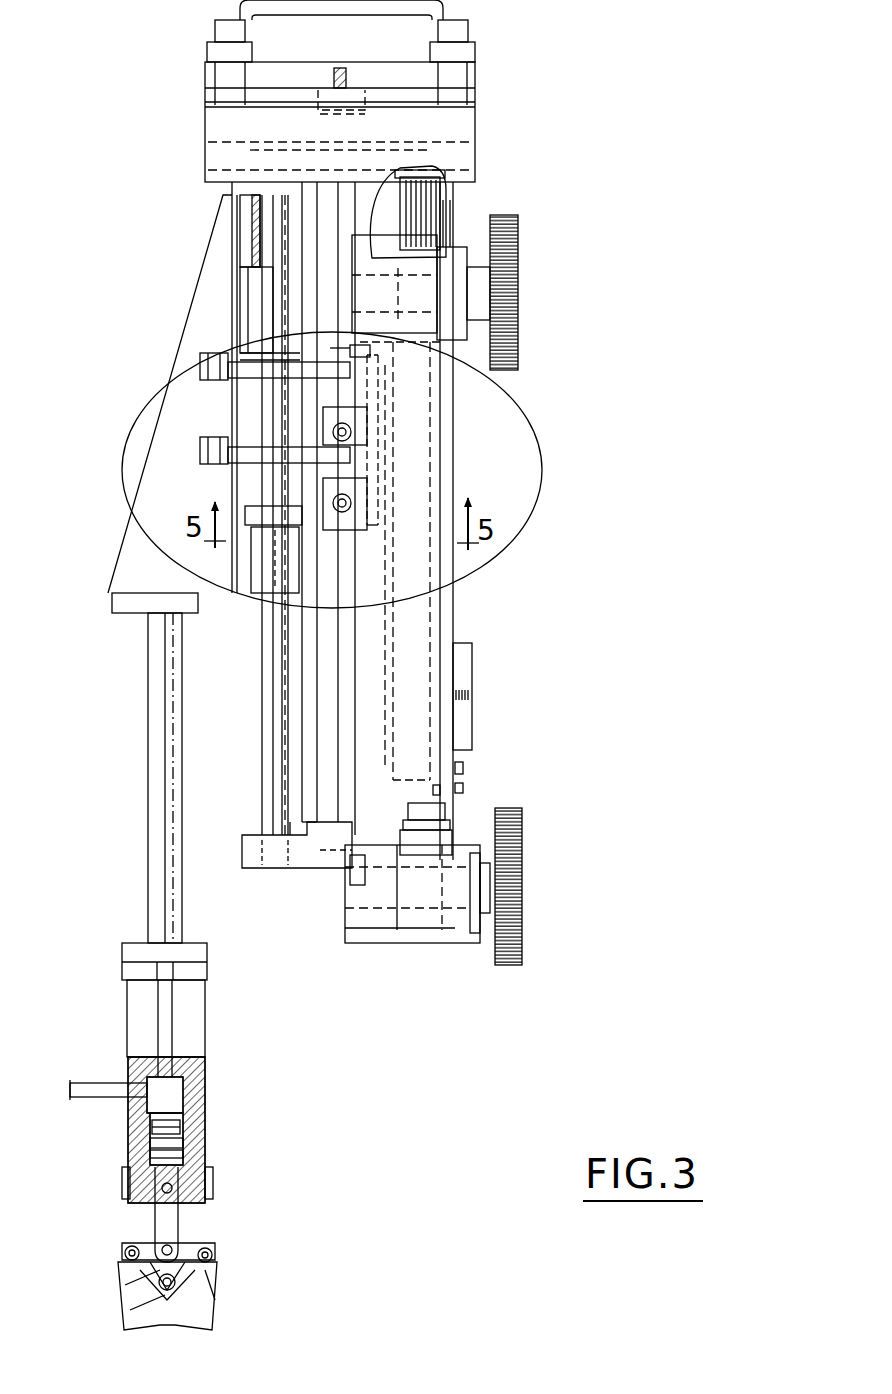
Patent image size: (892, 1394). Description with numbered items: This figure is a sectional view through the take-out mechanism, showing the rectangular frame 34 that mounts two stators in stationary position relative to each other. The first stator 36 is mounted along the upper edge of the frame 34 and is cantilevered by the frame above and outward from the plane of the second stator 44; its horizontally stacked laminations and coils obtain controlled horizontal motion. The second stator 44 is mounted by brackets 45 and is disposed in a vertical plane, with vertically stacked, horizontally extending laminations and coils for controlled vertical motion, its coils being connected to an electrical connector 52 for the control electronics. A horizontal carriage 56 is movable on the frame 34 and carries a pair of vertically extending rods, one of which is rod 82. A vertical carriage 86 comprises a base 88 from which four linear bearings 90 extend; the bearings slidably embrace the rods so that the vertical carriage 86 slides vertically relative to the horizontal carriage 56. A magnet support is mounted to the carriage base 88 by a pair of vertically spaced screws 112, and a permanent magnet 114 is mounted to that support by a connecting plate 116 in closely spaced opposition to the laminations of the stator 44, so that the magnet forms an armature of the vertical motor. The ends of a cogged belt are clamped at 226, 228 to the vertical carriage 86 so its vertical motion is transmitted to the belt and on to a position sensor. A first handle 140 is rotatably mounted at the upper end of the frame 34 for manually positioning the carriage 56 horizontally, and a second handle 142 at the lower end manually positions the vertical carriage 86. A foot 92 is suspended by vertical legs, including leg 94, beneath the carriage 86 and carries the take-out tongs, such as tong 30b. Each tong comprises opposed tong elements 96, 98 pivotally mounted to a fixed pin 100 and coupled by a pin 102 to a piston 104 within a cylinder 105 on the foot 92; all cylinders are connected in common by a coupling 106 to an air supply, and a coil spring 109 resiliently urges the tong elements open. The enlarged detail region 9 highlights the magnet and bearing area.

The first stator 36 is at (456, 134).
The linear bearings 90 is at (245, 216).
The first handle 140 is at (503, 229).
The base 88 is at (237, 280).
The screws 112 is at (205, 450).
The clamp 226 is at (345, 416).
The detail area 9 is at (546, 446).
The connecting plate 116 is at (372, 458).
The permanent magnet 114 is at (393, 502).
The vertical carriage 86 is at (118, 536).
The clamp 228 is at (340, 525).
The second stator 44 is at (436, 630).
The electrical connector 52 is at (473, 665).
The brackets 45 is at (440, 770).
The rectangular frame 34 is at (462, 800).
The second handle 142 is at (513, 846).
The vertical leg 94 is at (156, 736).
The rod 82 is at (266, 760).
The horizontal carriage 56 is at (262, 870).
The foot 92 is at (200, 1003).
The coupling 106 is at (100, 1085).
The coil spring 109 is at (195, 1072).
The cylinder 105 is at (150, 1132).
The piston 104 is at (195, 1140).
The take-out tong 30b is at (125, 1200).
The pin 102 is at (170, 1222).
The fixed pin 100 is at (187, 1282).
The tong element 96 is at (140, 1298).
The tong element 98 is at (195, 1292).